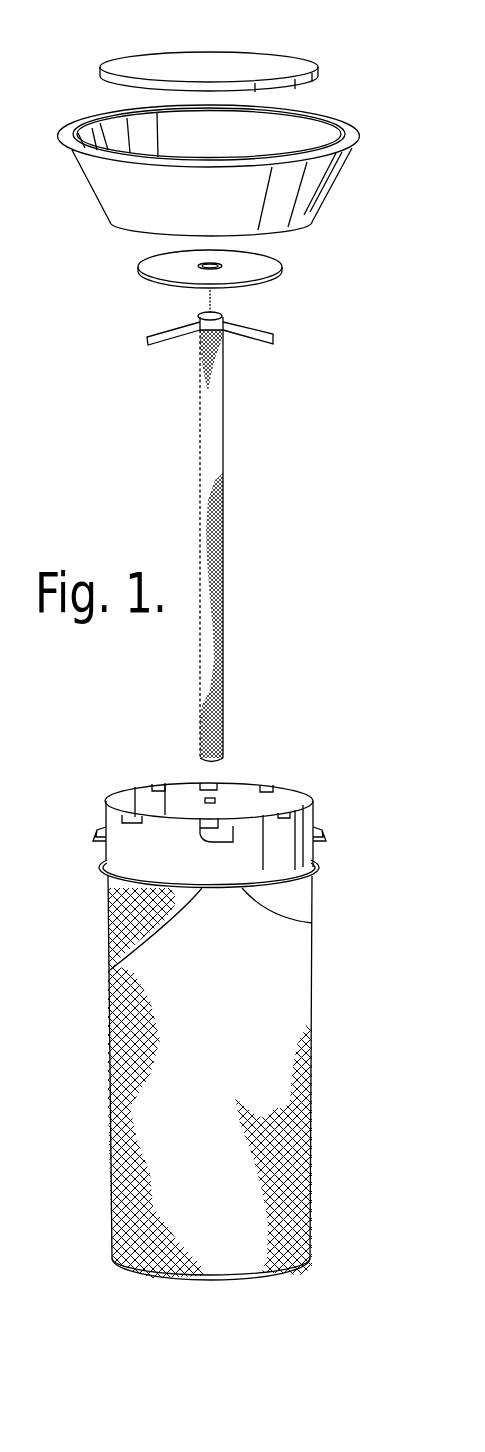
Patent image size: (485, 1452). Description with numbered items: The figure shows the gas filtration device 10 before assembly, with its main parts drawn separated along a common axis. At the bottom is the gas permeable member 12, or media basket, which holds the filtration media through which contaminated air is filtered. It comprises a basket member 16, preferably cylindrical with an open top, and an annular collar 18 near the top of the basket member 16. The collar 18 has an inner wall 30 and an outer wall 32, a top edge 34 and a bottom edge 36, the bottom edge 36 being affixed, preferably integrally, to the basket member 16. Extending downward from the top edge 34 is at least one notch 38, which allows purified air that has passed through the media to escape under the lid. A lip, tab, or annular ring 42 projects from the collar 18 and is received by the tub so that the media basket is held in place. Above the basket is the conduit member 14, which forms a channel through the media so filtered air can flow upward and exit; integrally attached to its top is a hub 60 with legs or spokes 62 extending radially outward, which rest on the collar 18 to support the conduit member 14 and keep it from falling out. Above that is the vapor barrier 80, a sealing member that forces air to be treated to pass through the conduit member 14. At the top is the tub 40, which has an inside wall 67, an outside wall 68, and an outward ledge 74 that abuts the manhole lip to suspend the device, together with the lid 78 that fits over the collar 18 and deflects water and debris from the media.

The filtration device 10 is at (370, 1270).
The gas permeable member 12 is at (322, 1069).
The conduit member 14 is at (237, 472).
The basket member 16 is at (262, 962).
The collar 18 is at (139, 858).
The inner wall 30 is at (255, 805).
The outer wall 32 is at (277, 858).
The top edge 34 is at (140, 787).
The bottom edge 36 is at (240, 887).
The notch 38 is at (227, 840).
The tub 40 is at (348, 178).
The annular ring 42 is at (120, 955).
The hub 60 is at (222, 315).
The legs 62 is at (258, 338).
The inside wall 67 is at (291, 137).
The outside wall 68 is at (112, 198).
The ledge 74 is at (70, 133).
The lid 78 is at (200, 67).
The vapor barrier 80 is at (262, 267).